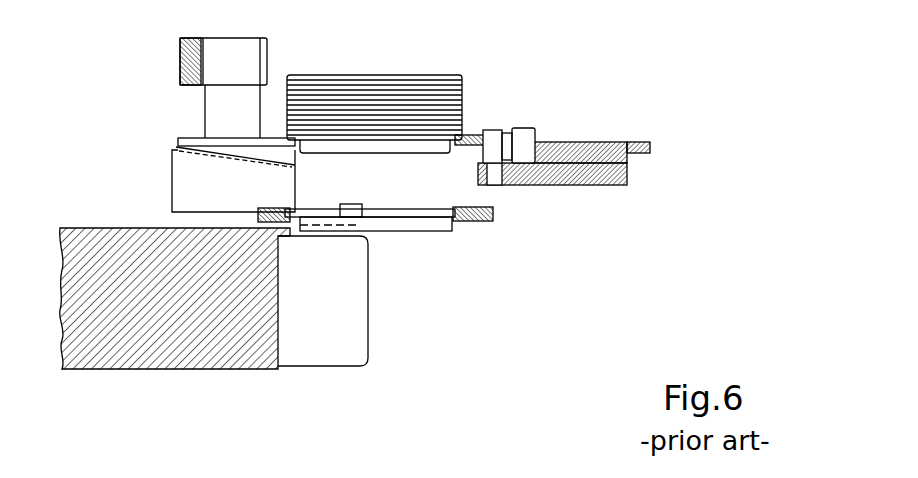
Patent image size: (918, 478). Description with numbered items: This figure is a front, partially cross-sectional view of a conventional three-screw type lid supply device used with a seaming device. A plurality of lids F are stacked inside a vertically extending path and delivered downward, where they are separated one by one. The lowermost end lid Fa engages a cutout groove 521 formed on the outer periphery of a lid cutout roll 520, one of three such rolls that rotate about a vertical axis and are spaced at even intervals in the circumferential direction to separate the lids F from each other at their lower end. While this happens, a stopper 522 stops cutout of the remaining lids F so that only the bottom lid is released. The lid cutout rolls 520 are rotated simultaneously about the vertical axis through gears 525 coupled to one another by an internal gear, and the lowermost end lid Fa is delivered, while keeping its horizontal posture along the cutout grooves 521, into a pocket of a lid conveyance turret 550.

The gear 525 is at (170, 84).
The cutout groove 521 is at (177, 145).
The lid cutout roll 520 is at (184, 181).
The stopper 522 is at (552, 101).
The lid conveyance turret 550 is at (220, 358).
The lid F is at (374, 72).
The lowermost end lid Fa is at (375, 174).